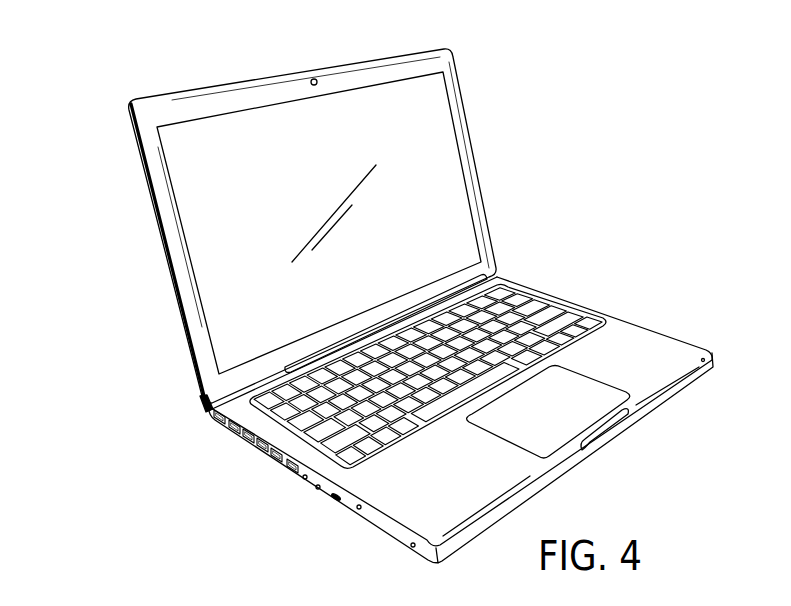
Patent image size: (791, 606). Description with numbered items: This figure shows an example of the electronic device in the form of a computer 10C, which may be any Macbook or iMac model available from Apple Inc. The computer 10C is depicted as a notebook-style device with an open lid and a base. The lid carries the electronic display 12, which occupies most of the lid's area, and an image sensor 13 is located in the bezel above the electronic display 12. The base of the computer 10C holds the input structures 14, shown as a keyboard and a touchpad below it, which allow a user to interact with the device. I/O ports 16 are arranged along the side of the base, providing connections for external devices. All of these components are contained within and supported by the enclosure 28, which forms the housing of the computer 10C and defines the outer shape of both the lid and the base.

The computer 10C is at (139, 242).
The electronic display 12 is at (435, 173).
The image sensor 13 is at (311, 82).
The input structures 14 is at (546, 310).
The I/O ports 16 is at (232, 438).
The enclosure 28 is at (608, 314).